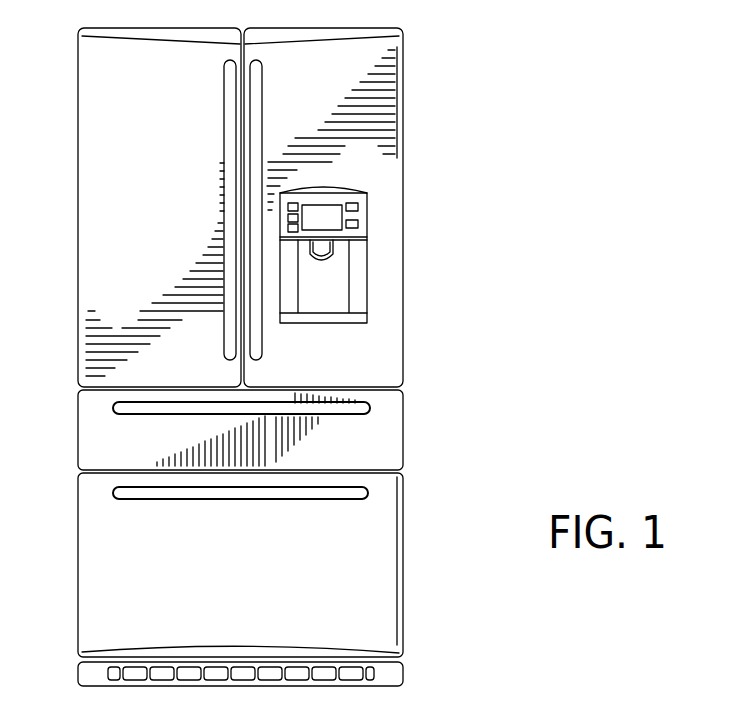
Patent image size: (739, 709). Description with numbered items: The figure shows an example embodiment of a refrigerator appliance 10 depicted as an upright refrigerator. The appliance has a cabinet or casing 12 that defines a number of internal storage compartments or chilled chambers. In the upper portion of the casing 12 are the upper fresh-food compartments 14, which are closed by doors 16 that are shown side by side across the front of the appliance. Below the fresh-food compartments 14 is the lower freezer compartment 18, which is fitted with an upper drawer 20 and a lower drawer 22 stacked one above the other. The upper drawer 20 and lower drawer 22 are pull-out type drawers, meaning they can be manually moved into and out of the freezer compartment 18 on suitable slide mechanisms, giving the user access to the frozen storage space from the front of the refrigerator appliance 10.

The refrigerator appliance 10 is at (278, 357).
The cabinet or casing 12 is at (404, 296).
The upper fresh-food compartments 14 is at (116, 181).
The doors 16 is at (148, 265).
The lower freezer compartment 18 is at (276, 522).
The upper drawer 20 is at (137, 455).
The lower drawer 22 is at (258, 584).